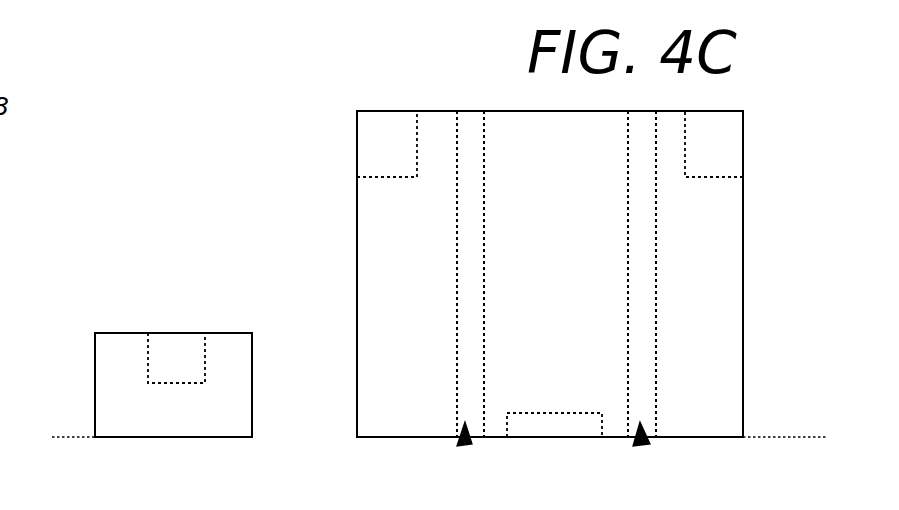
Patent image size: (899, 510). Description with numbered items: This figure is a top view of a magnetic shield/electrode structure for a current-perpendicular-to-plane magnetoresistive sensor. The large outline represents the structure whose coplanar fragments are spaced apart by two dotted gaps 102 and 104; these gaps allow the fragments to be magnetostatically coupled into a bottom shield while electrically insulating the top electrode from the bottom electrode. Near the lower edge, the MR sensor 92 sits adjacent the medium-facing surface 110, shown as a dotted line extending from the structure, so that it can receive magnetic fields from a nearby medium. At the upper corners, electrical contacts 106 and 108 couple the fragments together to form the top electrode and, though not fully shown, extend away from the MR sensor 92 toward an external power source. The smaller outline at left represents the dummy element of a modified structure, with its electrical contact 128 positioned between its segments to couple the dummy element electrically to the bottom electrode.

The MR sensor 92 is at (553, 425).
The gap 102 is at (644, 443).
The gap 104 is at (460, 446).
The electrical contact 106 is at (718, 145).
The electrical contact 108 is at (388, 142).
The medium-facing surface 110 is at (445, 436).
The electrical contact 128 is at (173, 348).